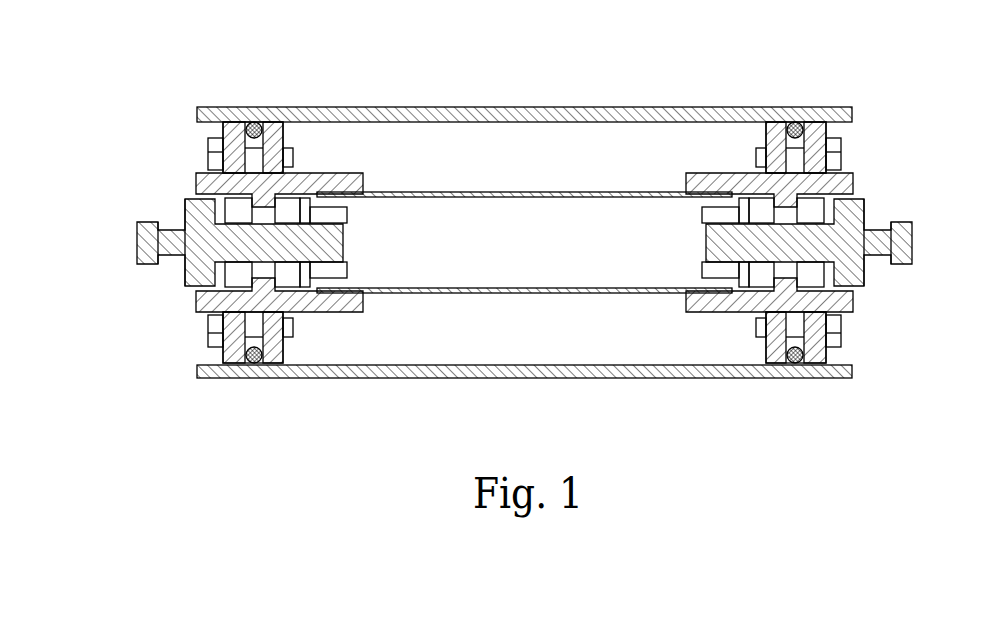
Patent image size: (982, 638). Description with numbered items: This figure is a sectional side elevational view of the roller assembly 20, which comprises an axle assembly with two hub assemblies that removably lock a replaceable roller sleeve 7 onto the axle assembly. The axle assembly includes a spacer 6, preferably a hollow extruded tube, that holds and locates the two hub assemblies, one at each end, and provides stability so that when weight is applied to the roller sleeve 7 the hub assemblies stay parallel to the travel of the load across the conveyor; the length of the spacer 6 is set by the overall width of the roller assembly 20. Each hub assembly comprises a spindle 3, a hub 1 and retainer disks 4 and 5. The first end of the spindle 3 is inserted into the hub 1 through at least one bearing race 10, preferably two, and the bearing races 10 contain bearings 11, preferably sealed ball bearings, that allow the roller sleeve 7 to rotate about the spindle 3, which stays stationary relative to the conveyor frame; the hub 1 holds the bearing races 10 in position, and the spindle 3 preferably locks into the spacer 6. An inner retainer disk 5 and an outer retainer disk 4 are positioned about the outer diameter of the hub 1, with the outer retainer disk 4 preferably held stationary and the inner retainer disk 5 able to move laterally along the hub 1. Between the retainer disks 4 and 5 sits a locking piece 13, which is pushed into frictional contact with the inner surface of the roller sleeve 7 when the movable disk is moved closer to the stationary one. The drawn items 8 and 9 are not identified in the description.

The hub 1 is at (535, 239).
The spindle 3 is at (523, 242).
The outer retainer disk 4 is at (530, 131).
The inner retainer disk 5 is at (524, 337).
The spacer 6 is at (524, 273).
The roller sleeve 7 is at (524, 418).
The nut 8 is at (524, 261).
The bearing ring 9 is at (524, 213).
The bearing race 10 is at (524, 213).
The bearings 11 is at (529, 233).
The locking piece 13 is at (521, 202).
The roller assembly 20 is at (523, 256).